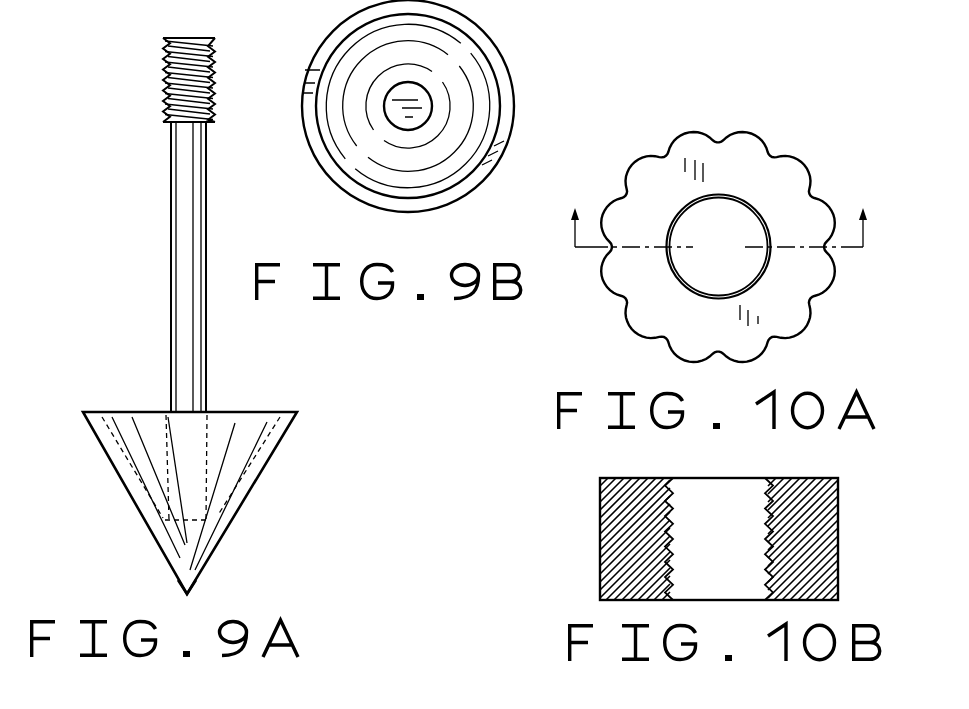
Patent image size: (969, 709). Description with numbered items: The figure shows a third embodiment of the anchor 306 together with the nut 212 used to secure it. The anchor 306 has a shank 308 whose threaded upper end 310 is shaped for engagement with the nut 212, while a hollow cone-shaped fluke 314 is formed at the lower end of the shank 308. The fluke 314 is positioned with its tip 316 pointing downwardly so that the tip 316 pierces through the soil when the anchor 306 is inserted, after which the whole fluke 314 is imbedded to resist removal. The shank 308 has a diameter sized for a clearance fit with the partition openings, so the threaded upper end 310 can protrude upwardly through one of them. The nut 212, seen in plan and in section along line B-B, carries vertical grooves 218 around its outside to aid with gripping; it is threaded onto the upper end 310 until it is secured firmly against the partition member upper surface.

In FIG. 9A, the anchor 306 is at (100, 152).
In FIG. 9B, the anchor 306 is at (537, 85).
In FIG. 9A, the shank 308 is at (183, 270).
In FIG. 9A, the threaded upper end 310 is at (163, 93).
In FIG. 9A, the hollow cone-shaped fluke 314 is at (139, 410).
In FIG. 9A, the tip 316 is at (189, 592).
In FIG. 10A, the nut 212 is at (753, 121).
In FIG. 10B, the nut 212 is at (856, 513).
In FIG. 10A, the vertical grooves 218 is at (812, 193).